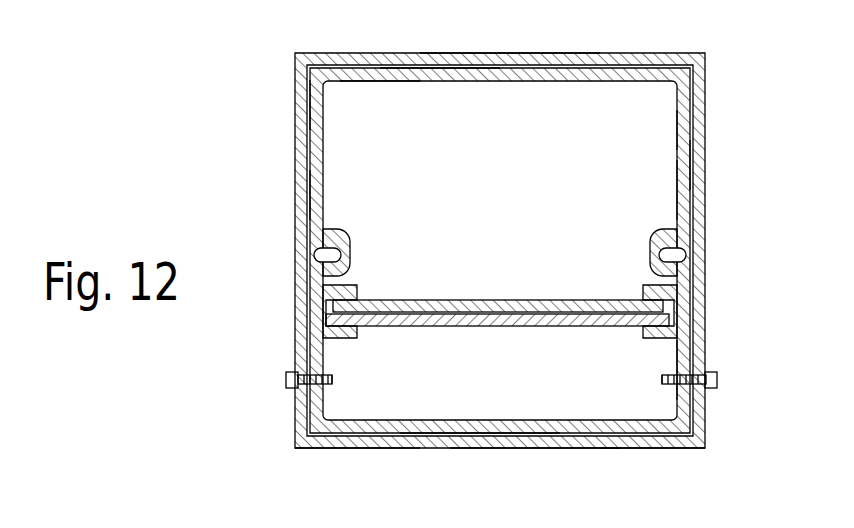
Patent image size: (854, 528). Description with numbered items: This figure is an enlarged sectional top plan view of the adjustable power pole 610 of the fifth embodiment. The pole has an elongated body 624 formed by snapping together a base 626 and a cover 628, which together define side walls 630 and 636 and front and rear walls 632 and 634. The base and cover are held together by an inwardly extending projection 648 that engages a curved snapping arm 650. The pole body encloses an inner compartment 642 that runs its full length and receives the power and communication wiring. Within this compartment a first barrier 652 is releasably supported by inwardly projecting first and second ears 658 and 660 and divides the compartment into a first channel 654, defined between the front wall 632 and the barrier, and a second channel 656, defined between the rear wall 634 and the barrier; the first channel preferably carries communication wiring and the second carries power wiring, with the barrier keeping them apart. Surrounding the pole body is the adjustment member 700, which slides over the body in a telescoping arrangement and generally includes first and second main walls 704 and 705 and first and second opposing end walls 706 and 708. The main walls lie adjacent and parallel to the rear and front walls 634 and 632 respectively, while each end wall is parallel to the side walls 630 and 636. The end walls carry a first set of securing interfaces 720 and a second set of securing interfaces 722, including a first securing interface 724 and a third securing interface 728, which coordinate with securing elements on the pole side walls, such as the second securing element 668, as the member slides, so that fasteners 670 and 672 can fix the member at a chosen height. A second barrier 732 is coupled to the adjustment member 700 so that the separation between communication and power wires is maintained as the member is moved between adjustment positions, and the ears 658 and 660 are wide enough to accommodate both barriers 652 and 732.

The adjustable power pole 610 is at (736, 74).
The first end wall 706 is at (698, 99).
The first main wall 704 is at (508, 57).
The second main wall 705 is at (540, 440).
The base 626 is at (650, 434).
The adjustment member 700 is at (347, 458).
The second end wall 708 is at (302, 149).
The cover 628 is at (304, 98).
The side wall 636 is at (302, 190).
The rear wall 634 is at (420, 75).
The front wall 632 is at (461, 425).
The inner compartment 642 is at (361, 94).
The elongated body 624 is at (683, 128).
The side wall 630 is at (681, 162).
The second channel 656 is at (666, 184).
The first channel 654 is at (666, 358).
The curved snapping arm 650 is at (320, 229).
The inwardly extending projection 648 is at (328, 257).
The second ear 660 is at (327, 291).
The first ear 658 is at (664, 296).
The first barrier 652 is at (480, 297).
The second barrier 732 is at (523, 331).
The second set of securing interfaces 722 is at (452, 372).
The third securing interface 728 is at (297, 373).
The second securing element 668 is at (331, 380).
The fastener 672 is at (331, 386).
The first set of securing interfaces 720 is at (687, 403).
The first securing interface 724 is at (712, 375).
The fastener 670 is at (666, 383).